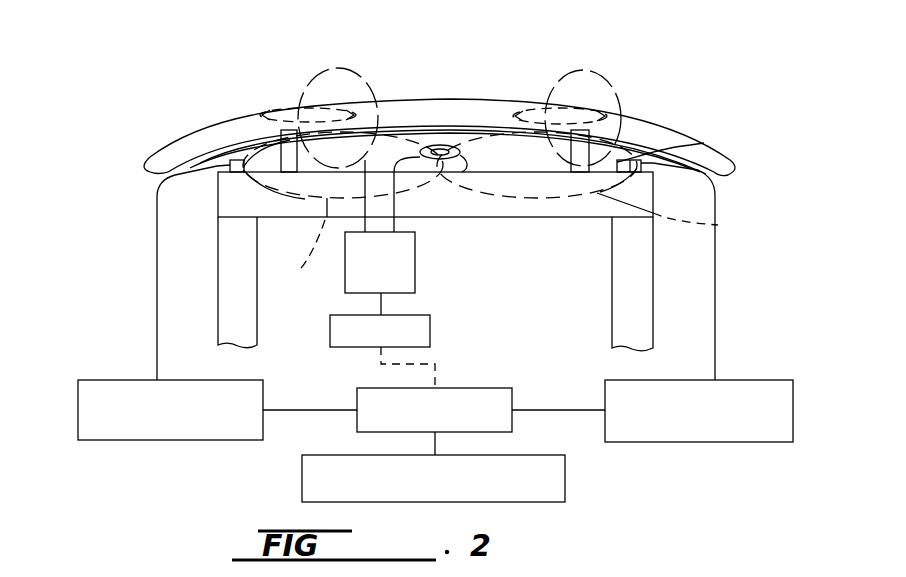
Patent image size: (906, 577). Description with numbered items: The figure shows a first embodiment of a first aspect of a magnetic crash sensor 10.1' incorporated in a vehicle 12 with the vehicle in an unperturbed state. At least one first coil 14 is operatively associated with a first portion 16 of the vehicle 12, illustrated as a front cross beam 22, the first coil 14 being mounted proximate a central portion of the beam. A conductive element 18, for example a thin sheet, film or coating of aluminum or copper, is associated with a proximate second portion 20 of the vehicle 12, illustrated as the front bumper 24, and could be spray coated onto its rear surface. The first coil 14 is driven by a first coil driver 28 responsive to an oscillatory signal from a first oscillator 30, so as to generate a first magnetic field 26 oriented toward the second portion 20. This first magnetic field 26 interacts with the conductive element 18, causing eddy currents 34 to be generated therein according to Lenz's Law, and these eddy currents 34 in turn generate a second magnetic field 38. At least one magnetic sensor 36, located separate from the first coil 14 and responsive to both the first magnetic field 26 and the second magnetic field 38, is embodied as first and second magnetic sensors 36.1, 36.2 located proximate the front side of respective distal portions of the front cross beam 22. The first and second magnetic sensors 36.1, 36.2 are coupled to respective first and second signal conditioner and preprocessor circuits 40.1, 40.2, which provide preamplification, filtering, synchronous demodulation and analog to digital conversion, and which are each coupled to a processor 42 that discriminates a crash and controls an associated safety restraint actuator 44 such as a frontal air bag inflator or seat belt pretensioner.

The magnetic crash sensor 10.1' is at (744, 60).
The vehicle 12 is at (146, 138).
The first coil 14 is at (443, 147).
The first portion of the vehicle 16 is at (434, 193).
The conductive element 18 is at (206, 153).
The second portion of the vehicle 20 is at (404, 88).
The front cross beam 22 is at (538, 218).
The front bumper 24 is at (663, 113).
The first magnetic field 26 is at (737, 227).
The first coil driver 28 is at (417, 275).
The first oscillator 30 is at (330, 344).
The eddy currents 34 is at (287, 110).
The magnetic sensor 36 is at (453, 152).
The first magnetic sensor 36.1 is at (233, 164).
The second magnetic sensor 36.2 is at (693, 147).
The second magnetic field 38 is at (350, 68).
The first signal conditioner and preprocessor circuit 40.1 is at (207, 438).
The second signal conditioner and preprocessor circuit 40.2 is at (668, 436).
The processor 42 is at (357, 428).
The safety restraint actuator 44 is at (565, 488).